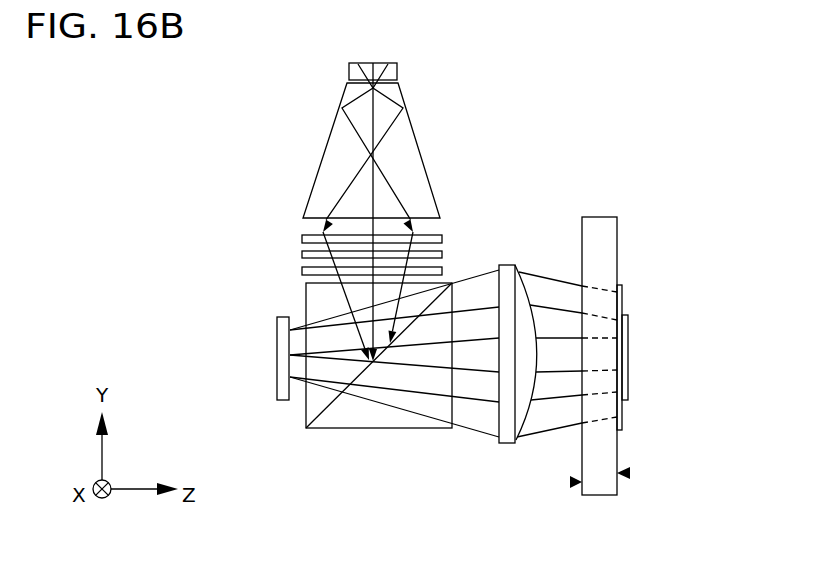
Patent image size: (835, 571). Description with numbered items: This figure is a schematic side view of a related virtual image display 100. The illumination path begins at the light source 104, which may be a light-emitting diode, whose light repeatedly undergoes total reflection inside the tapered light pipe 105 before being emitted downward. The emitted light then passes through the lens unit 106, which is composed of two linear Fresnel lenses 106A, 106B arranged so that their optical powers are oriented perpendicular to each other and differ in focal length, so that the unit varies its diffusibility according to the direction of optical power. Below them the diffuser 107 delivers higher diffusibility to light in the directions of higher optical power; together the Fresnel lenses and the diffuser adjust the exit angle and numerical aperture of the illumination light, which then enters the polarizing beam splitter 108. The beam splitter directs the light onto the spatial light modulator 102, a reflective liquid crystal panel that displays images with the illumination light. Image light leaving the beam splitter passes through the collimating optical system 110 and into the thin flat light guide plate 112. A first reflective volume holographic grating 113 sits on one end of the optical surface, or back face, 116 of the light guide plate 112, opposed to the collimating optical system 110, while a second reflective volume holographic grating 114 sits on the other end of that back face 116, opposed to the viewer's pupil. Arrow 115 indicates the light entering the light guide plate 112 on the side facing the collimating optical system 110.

The virtual image display 100 is at (695, 71).
The spatial light modulator 102 is at (277, 365).
The light source 104 is at (397, 72).
The tapered light pipe 105 is at (407, 138).
The lens unit 106 is at (445, 193).
The linear Fresnel lens 106A is at (443, 238).
The linear Fresnel lens 106B is at (443, 254).
The diffuser 107 is at (443, 270).
The polarizing beam splitter 108 is at (368, 415).
The collimating optical system 110 is at (505, 443).
The light guide plate 112 is at (617, 248).
The first reflective volume holographic grating 113 is at (622, 417).
The second reflective volume holographic grating 114 is at (628, 337).
The incident light 115 is at (570, 482).
The optical surface (back face) 116 is at (630, 473).